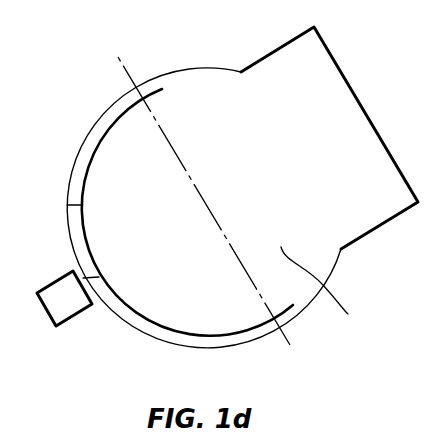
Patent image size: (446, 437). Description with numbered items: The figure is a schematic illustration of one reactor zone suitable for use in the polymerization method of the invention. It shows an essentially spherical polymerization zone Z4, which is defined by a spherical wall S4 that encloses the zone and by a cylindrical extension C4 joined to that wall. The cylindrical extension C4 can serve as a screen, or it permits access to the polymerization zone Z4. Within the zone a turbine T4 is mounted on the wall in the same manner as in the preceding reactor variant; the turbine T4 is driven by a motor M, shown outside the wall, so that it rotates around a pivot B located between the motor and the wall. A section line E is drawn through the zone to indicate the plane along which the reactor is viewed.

The spherical wall S4 is at (93, 130).
The turbine T4 is at (67, 205).
The cylindrical extension C4 is at (370, 188).
The motor M is at (64, 298).
The pivot B is at (96, 283).
The polymerization zone Z4 is at (327, 288).
The section line E- E is at (207, 199).